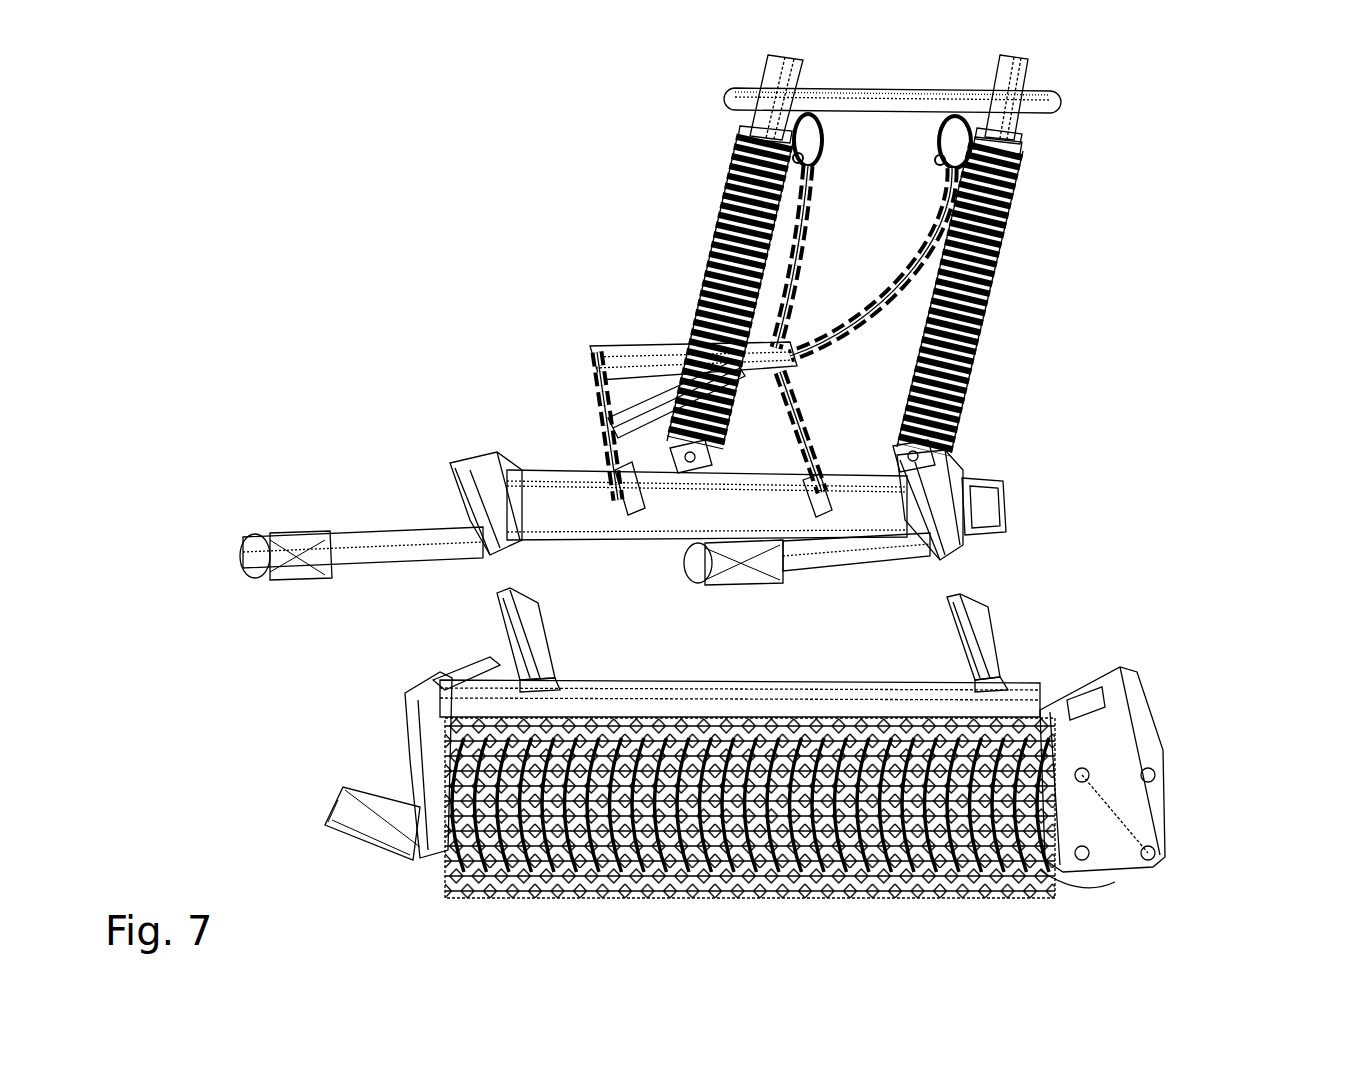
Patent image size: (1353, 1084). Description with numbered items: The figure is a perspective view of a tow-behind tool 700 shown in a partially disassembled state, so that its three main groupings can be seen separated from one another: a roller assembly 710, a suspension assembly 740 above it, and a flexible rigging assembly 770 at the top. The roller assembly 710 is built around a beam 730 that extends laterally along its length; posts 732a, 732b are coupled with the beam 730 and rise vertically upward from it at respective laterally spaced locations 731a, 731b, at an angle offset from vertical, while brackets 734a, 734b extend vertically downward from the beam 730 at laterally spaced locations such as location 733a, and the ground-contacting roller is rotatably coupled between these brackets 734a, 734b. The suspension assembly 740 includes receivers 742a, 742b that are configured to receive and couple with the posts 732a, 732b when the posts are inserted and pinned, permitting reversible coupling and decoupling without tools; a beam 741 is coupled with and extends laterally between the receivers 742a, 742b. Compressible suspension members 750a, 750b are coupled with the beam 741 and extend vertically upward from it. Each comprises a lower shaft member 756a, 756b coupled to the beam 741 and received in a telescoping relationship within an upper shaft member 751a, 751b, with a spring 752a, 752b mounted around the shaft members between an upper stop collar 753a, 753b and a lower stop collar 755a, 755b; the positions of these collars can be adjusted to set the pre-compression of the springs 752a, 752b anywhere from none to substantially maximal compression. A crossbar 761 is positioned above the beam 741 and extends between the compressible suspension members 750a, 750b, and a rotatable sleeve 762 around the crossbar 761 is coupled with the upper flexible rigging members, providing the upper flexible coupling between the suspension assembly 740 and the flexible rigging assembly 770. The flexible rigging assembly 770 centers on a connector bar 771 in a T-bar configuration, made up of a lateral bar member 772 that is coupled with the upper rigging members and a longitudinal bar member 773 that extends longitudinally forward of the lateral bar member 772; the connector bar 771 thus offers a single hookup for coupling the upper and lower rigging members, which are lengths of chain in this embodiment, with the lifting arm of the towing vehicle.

The tow-behind tool 700 is at (333, 150).
The roller assembly 710 is at (1200, 745).
The beam 730 is at (770, 675).
The location 731a is at (1012, 665).
The location 731b is at (562, 668).
The post 732a is at (958, 564).
The post 732b is at (508, 562).
The location 733a is at (448, 665).
The bracket 734a is at (1090, 660).
The bracket 734b is at (430, 748).
The suspension assembly 740 is at (1080, 478).
The beam 741 is at (628, 522).
The receiver 742a is at (955, 458).
The receiver 742b is at (455, 485).
The compressible suspension member 750a is at (1015, 250).
The compressible suspension member 750b is at (715, 222).
The upper shaft member 751a is at (1040, 128).
The upper shaft member 751b is at (757, 118).
The spring 752a is at (985, 325).
The spring 752b is at (730, 178).
The upper stop collar 753a is at (1000, 142).
The upper stop collar 753b is at (748, 132).
The lower stop collar 755a is at (892, 452).
The lower stop collar 755b is at (708, 465).
The lower shaft member 756a is at (910, 398).
The lower shaft member 756b is at (706, 300).
The crossbar 761 is at (1032, 95).
The rotatable sleeve 762 is at (890, 95).
The flexible rigging assembly 770 is at (495, 345).
The connector bar 771 is at (575, 345).
The lateral bar member 772 is at (642, 345).
The longitudinal bar member 773 is at (646, 420).